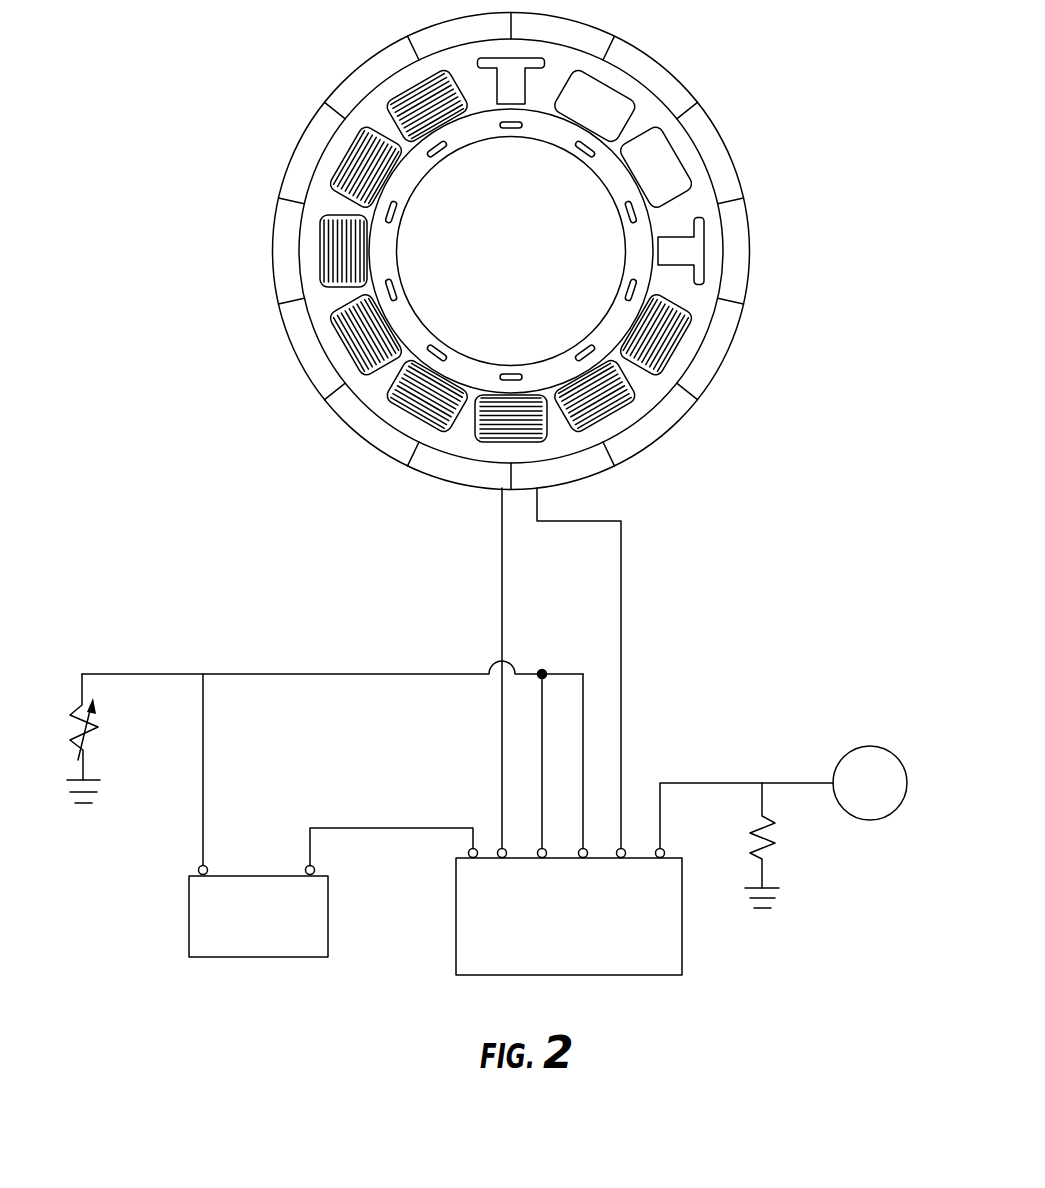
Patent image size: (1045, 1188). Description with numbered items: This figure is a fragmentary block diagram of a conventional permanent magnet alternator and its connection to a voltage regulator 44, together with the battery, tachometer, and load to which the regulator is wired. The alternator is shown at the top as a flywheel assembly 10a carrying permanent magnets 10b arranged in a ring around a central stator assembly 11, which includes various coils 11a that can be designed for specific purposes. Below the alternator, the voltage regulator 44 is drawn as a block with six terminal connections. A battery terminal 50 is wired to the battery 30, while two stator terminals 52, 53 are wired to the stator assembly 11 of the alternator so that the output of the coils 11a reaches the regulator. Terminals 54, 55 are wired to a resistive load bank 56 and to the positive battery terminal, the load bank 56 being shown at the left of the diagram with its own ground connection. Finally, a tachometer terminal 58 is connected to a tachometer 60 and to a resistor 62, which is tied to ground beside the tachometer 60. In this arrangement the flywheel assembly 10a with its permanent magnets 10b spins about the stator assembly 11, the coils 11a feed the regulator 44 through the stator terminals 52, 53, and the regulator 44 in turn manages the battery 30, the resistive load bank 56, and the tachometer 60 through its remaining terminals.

The flywheel assembly 10a is at (643, 53).
The permanent magnets 10b is at (737, 180).
The stator assembly 11 is at (515, 277).
The coils 11a is at (540, 437).
The battery 30 is at (223, 958).
The voltage regulator 44 is at (683, 935).
The battery terminal 50 is at (473, 848).
The stator terminal 52 is at (501, 848).
The stator terminal 53 is at (623, 848).
The terminal 54 is at (544, 848).
The terminal 55 is at (585, 848).
The resistive load bank 56 is at (75, 742).
The tachometer terminal 58 is at (665, 852).
The tachometer 60 is at (877, 748).
The resistor 62 is at (772, 836).